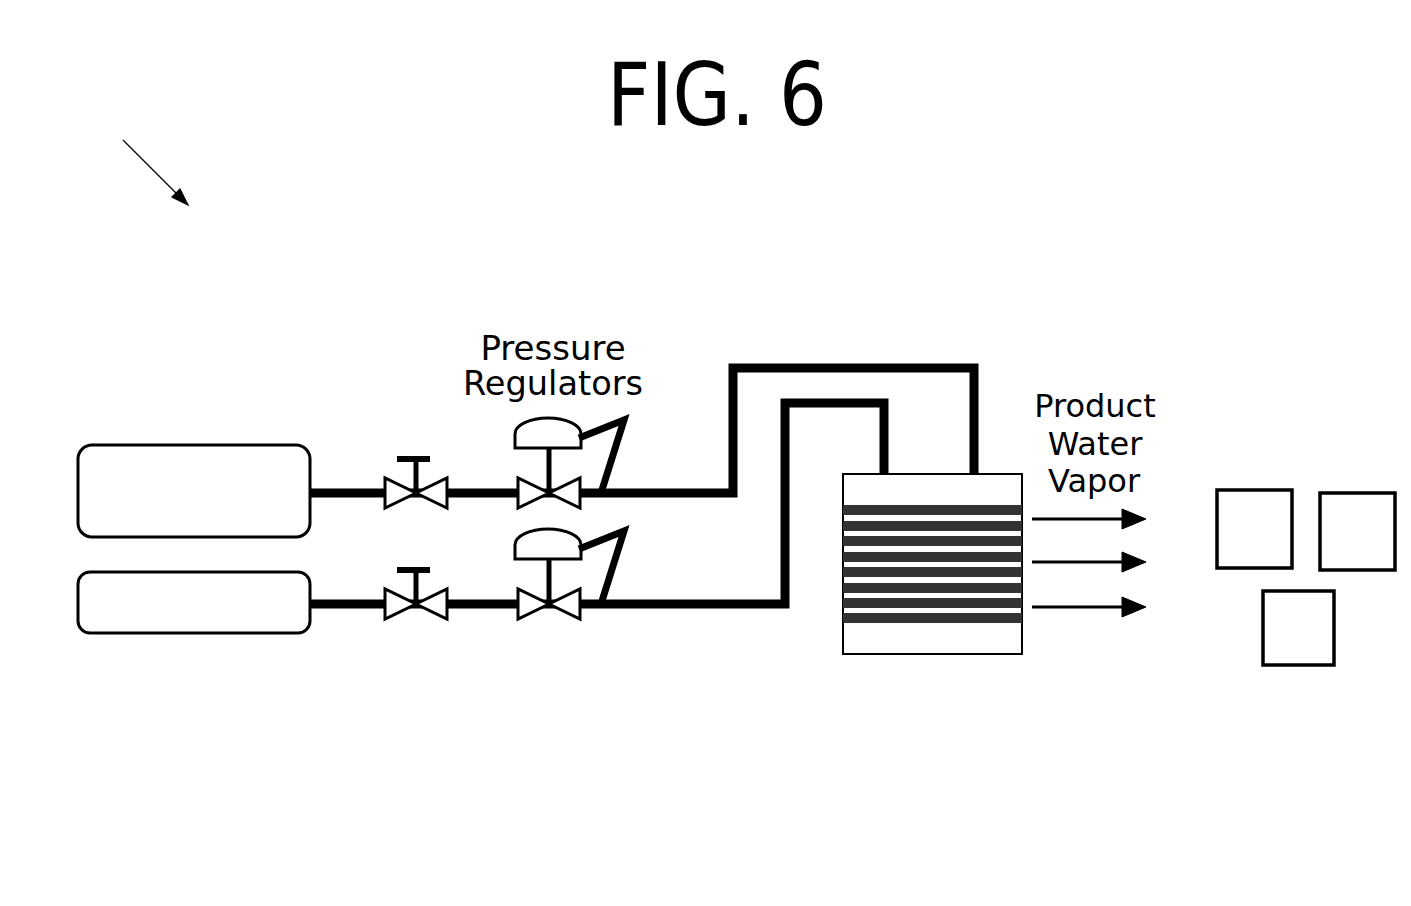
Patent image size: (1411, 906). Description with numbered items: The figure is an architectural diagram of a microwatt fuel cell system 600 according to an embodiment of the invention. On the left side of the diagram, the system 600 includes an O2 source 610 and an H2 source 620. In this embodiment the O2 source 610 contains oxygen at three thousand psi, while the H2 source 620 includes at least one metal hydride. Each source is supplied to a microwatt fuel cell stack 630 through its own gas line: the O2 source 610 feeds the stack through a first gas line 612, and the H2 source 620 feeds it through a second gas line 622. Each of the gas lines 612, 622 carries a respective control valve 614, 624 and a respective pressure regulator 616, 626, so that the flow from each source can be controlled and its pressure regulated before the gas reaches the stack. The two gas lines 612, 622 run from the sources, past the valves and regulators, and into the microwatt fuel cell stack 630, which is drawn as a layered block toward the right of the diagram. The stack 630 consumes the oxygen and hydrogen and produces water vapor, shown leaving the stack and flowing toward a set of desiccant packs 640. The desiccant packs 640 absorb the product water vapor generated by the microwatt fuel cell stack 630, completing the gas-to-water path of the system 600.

The microwatt fuel cell system 600 is at (133, 155).
The O2 source 610 is at (183, 445).
The gas line 612 is at (762, 366).
The control valve 614 is at (403, 454).
The pressure regulator 616 is at (535, 506).
The H2 source 620 is at (181, 636).
The gas line 622 is at (700, 612).
The control valve 624 is at (422, 616).
The pressure regulator 626 is at (562, 616).
The microwatt fuel cell stack 630 is at (927, 655).
The desiccant packs 640 is at (1302, 667).